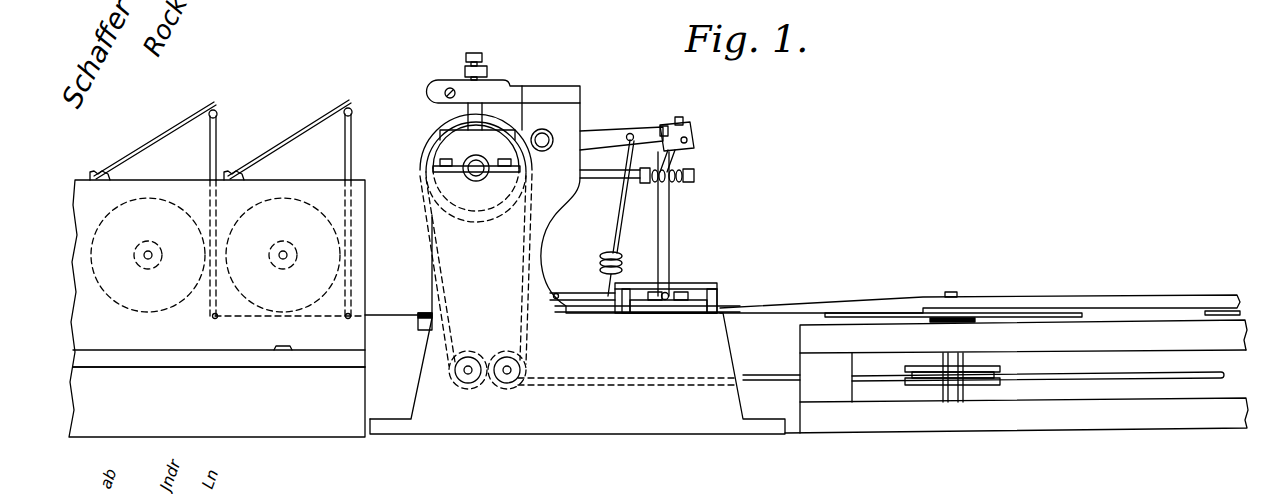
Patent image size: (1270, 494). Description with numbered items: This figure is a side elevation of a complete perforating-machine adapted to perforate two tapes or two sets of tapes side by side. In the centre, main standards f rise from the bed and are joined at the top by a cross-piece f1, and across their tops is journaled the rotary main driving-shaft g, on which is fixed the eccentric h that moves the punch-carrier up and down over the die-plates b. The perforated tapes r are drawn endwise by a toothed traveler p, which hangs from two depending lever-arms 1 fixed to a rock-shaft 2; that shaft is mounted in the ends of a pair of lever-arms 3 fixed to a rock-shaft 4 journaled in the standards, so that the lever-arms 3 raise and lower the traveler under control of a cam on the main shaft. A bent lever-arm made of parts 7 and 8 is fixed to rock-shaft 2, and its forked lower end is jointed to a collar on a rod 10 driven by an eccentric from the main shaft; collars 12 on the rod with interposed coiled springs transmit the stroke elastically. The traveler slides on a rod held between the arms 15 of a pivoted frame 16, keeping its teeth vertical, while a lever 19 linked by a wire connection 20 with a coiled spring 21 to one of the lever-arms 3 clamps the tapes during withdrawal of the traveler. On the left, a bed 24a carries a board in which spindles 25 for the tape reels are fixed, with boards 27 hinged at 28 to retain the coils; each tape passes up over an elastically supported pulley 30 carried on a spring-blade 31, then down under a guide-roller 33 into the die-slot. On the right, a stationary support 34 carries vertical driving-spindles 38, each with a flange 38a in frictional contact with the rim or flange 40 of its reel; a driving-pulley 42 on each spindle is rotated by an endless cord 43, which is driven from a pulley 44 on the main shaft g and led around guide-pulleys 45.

The lever-arms 1 is at (670, 250).
The rock-shaft 2 is at (663, 127).
The lever-arms 3 is at (613, 134).
The rock-shaft 4 is at (544, 151).
The bent lever-arm part 7 is at (692, 136).
The bent lever-arm part 8 is at (680, 162).
The rod 10 is at (601, 180).
The collars 12 is at (646, 183).
The arms 15 is at (600, 292).
The frame 16 is at (638, 283).
The lever 19 is at (590, 308).
The wire connection 20 is at (621, 228).
The coiled spring 21 is at (600, 262).
The bed or support 24a is at (150, 362).
The spindles 25 is at (152, 255).
The boards 27 is at (217, 308).
The hinge 28 is at (285, 345).
The pulley 30 is at (218, 114).
The spring-blade 31 is at (167, 137).
The guide-roller 33 is at (216, 320).
The stationary support 34 is at (1016, 376).
The driving-spindles 38 is at (961, 283).
The flange 38a is at (935, 323).
The rim or flange 40 is at (852, 315).
The driving-pulley 42 is at (990, 395).
The endless cord 43 is at (983, 362).
The pulley 44 is at (425, 176).
The guide-pulleys 45 is at (500, 352).
The die-plates b is at (420, 312).
The main standards f is at (516, 298).
The cross-piece f1 is at (568, 92).
The main driving-shaft g is at (478, 180).
The eccentric h is at (485, 72).
The traveler p is at (394, 315).
The tapes r is at (786, 312).